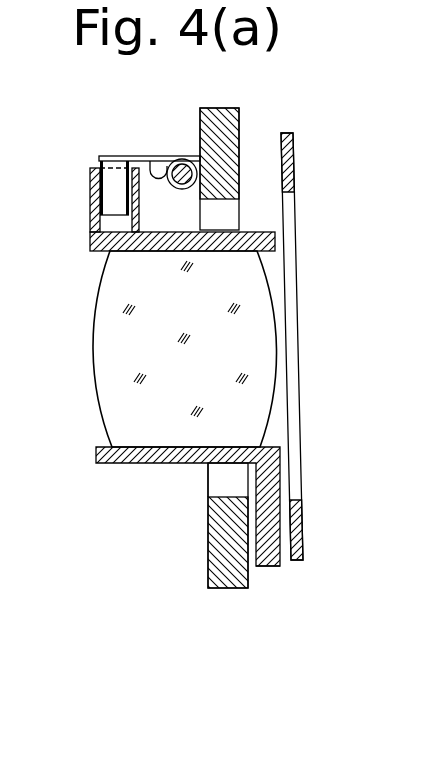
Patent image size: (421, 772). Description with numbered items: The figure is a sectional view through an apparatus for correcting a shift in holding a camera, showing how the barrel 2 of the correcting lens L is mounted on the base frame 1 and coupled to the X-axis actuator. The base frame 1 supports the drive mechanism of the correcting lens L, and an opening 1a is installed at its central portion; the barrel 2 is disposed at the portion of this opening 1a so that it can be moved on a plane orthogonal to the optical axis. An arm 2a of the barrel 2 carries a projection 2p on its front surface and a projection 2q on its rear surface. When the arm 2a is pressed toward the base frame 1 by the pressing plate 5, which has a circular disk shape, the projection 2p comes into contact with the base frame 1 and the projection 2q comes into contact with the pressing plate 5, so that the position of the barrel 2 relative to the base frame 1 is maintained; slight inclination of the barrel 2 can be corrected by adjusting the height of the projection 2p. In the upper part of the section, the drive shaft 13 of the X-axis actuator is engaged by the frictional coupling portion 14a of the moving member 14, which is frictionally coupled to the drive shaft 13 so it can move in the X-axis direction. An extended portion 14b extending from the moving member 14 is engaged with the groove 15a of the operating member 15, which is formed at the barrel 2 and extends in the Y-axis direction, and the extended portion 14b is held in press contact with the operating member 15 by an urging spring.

The base frame 1 is at (240, 126).
The opening 1a is at (208, 482).
The barrel 2 is at (120, 465).
The arm 2a is at (272, 566).
The projection 2p is at (253, 528).
The projection 2q is at (285, 530).
The pressing plate 5 is at (302, 517).
The drive shaft 13 is at (181, 158).
The moving member 14 is at (108, 156).
The frictional coupling portion 14a is at (157, 163).
The extended portion 14b is at (103, 180).
The operating member 15 is at (90, 195).
The groove 15a is at (100, 222).
The correcting lens L is at (93, 353).